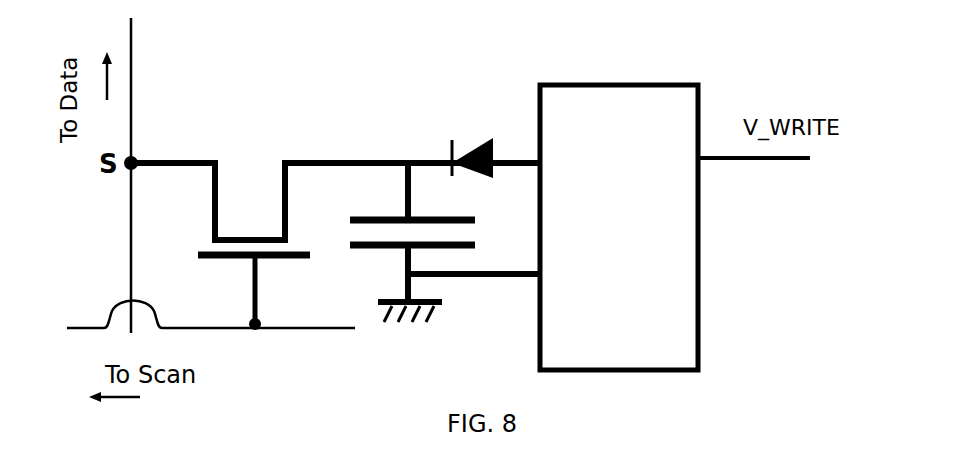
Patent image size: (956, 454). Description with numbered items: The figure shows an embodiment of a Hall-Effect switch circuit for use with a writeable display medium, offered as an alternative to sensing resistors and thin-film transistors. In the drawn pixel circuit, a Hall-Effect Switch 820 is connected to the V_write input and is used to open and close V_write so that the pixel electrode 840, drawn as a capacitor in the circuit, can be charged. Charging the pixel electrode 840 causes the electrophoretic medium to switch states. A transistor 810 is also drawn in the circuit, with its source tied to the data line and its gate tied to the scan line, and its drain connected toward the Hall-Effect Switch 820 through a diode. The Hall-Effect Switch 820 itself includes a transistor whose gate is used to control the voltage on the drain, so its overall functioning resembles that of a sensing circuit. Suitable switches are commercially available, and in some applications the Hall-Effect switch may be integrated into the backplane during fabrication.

The thin-film transistor 810 is at (280, 260).
The Hall-Effect Switch 820 is at (619, 227).
The pixel electrode 840 is at (458, 248).